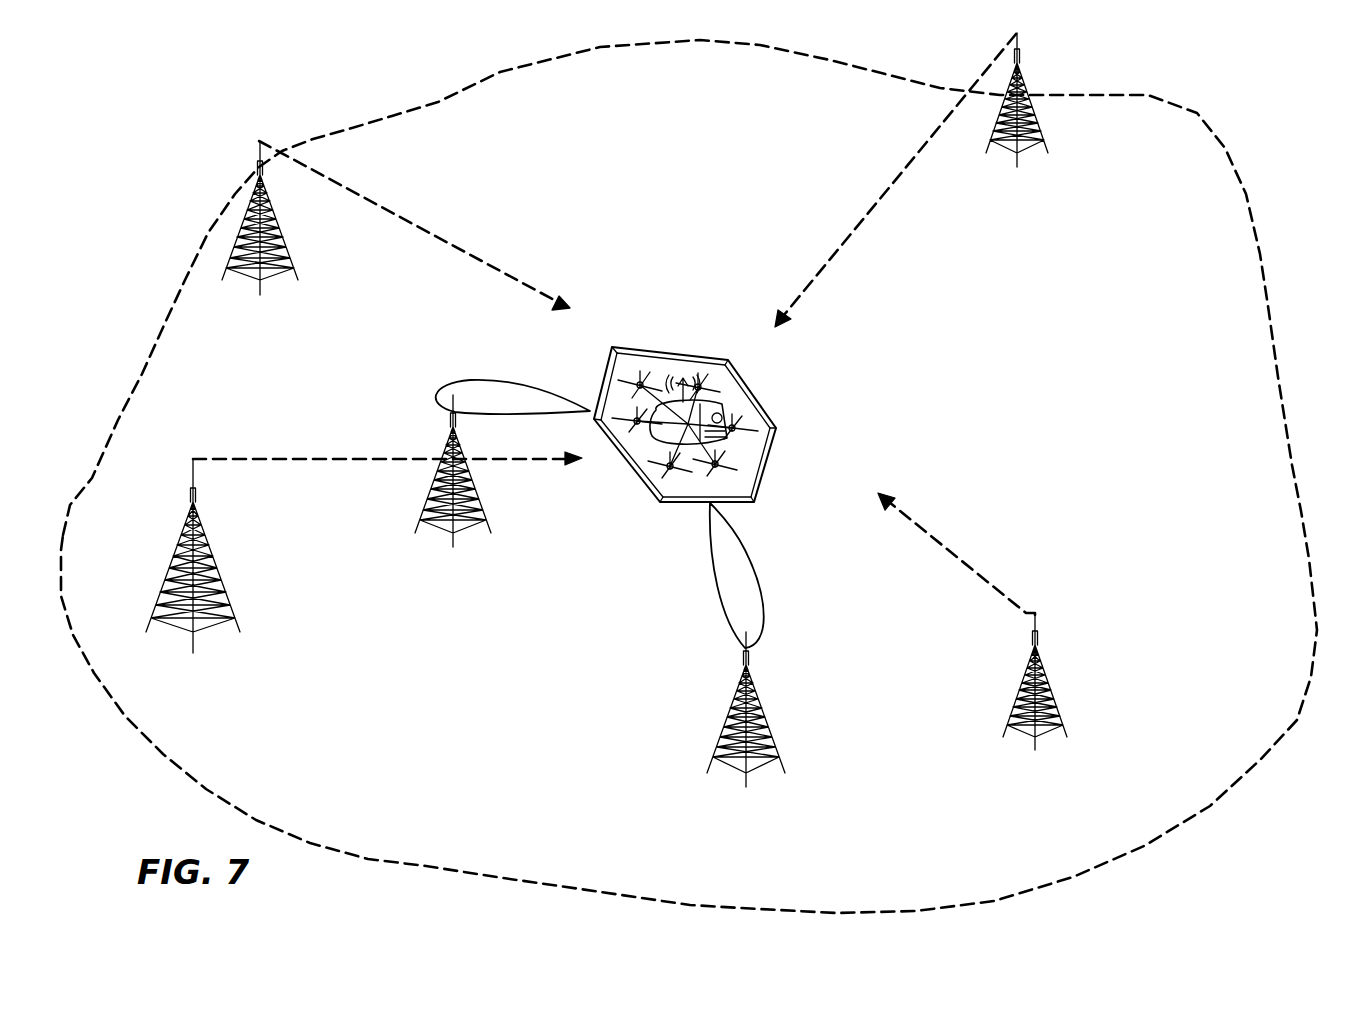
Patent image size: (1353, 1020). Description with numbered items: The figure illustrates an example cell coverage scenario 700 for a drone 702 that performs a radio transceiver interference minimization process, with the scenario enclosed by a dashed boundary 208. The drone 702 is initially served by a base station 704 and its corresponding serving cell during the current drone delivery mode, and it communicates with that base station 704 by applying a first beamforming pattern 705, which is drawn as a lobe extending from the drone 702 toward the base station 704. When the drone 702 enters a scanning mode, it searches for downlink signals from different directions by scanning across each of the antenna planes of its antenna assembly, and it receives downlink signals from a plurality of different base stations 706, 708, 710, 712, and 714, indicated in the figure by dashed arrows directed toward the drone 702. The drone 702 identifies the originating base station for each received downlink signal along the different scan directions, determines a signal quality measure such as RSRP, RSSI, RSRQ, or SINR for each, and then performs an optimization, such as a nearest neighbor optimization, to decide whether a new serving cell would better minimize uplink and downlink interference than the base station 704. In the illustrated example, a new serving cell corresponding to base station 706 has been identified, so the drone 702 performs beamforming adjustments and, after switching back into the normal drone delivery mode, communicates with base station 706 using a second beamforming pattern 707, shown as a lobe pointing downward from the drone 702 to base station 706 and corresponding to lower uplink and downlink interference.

The cell coverage scenario 700 is at (418, 66).
The coverage area boundary 208 is at (1268, 314).
The drone 702 is at (770, 440).
The base station 704 is at (483, 515).
The first beamforming pattern 705 is at (500, 381).
The base station 706 is at (763, 720).
The second beamforming pattern 707 is at (748, 562).
The base station 708 is at (1050, 687).
The base station 710 is at (1022, 78).
The base station 712 is at (277, 245).
The base station 714 is at (217, 557).